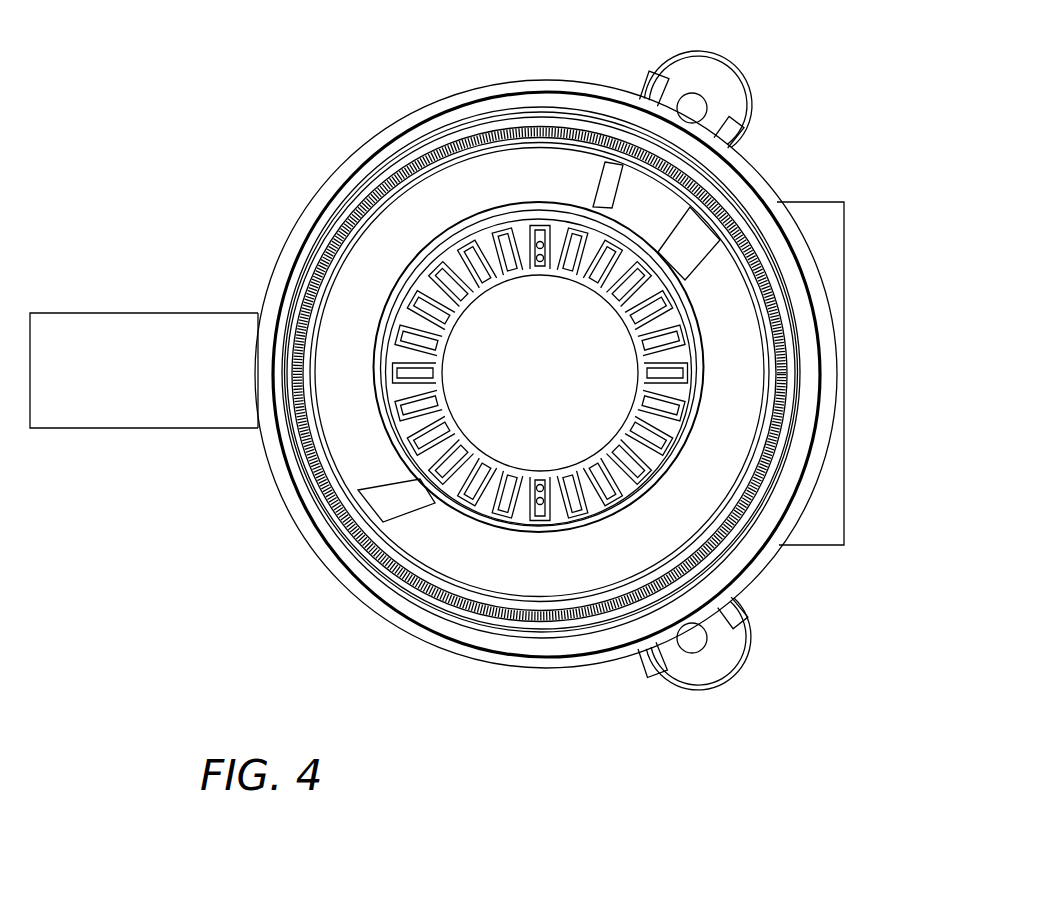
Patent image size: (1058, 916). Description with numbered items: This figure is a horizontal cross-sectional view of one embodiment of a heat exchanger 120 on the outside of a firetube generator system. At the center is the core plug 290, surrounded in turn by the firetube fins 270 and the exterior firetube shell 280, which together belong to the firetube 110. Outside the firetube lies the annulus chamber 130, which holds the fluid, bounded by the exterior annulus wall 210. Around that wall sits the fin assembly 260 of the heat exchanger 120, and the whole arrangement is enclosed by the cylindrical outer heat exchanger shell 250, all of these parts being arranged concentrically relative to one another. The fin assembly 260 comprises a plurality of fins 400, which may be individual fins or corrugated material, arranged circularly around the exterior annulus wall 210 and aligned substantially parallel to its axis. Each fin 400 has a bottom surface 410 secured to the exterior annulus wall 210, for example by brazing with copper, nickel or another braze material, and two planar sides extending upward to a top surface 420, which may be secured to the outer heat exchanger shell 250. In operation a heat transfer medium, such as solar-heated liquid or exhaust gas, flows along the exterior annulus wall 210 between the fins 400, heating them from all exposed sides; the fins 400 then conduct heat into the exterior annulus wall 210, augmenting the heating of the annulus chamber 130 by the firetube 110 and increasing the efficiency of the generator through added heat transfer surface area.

The firetube 110 is at (460, 253).
The heat exchanger 120 is at (520, 667).
The annulus chamber 130 is at (357, 478).
The exterior annulus wall 210 is at (368, 540).
The cylindrical outer heat exchanger shell 250 is at (422, 636).
The fin assembly 260 is at (312, 273).
The firetube fins 270 is at (690, 373).
The exterior firetube shell 280 is at (676, 468).
The core plug 290 is at (598, 318).
The fins 400 is at (536, 125).
The bottom surface 410 is at (569, 128).
The top surface 420 is at (453, 140).